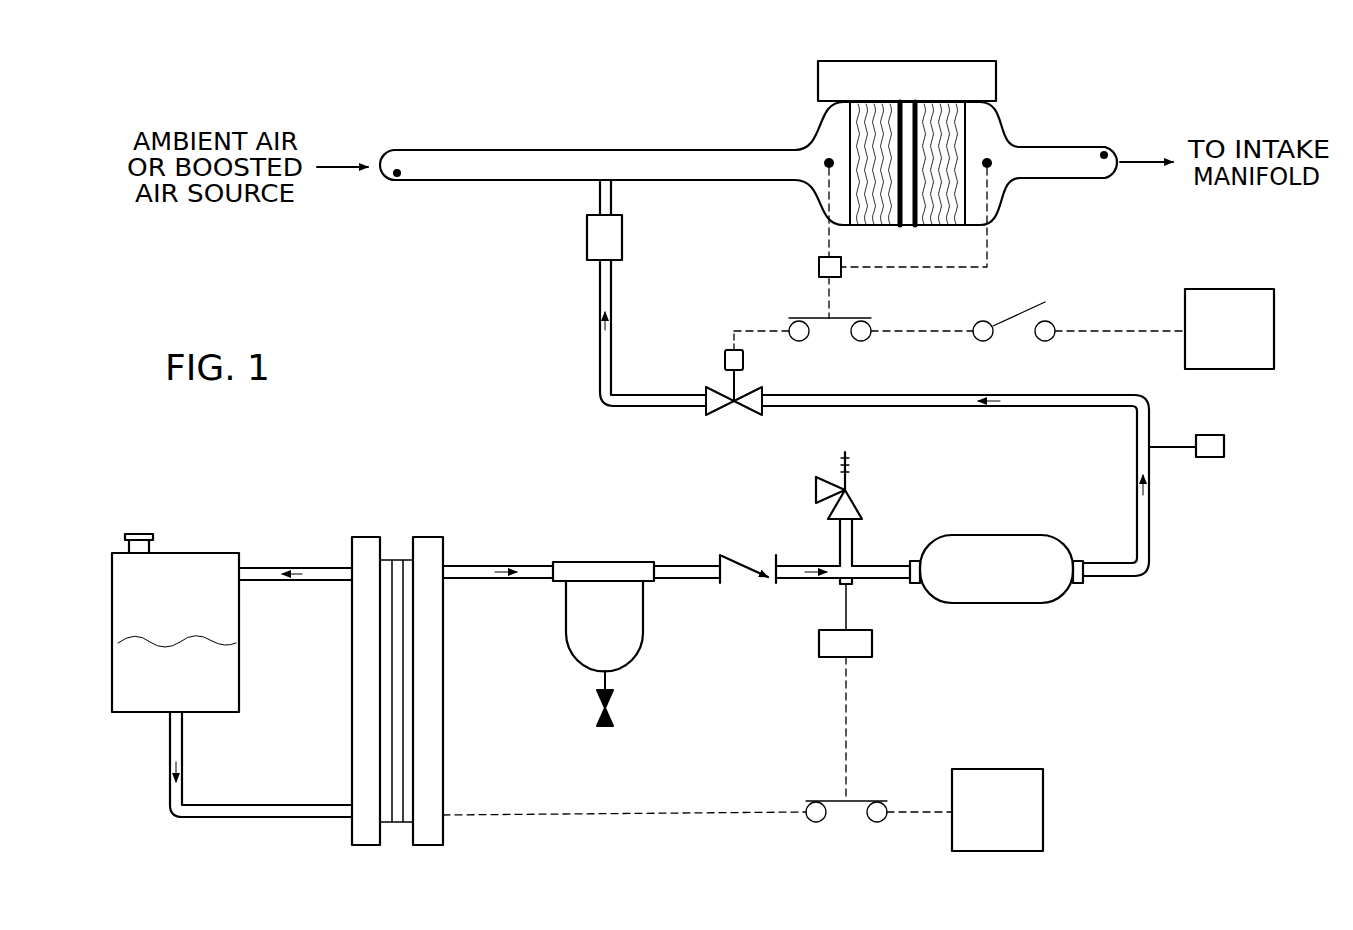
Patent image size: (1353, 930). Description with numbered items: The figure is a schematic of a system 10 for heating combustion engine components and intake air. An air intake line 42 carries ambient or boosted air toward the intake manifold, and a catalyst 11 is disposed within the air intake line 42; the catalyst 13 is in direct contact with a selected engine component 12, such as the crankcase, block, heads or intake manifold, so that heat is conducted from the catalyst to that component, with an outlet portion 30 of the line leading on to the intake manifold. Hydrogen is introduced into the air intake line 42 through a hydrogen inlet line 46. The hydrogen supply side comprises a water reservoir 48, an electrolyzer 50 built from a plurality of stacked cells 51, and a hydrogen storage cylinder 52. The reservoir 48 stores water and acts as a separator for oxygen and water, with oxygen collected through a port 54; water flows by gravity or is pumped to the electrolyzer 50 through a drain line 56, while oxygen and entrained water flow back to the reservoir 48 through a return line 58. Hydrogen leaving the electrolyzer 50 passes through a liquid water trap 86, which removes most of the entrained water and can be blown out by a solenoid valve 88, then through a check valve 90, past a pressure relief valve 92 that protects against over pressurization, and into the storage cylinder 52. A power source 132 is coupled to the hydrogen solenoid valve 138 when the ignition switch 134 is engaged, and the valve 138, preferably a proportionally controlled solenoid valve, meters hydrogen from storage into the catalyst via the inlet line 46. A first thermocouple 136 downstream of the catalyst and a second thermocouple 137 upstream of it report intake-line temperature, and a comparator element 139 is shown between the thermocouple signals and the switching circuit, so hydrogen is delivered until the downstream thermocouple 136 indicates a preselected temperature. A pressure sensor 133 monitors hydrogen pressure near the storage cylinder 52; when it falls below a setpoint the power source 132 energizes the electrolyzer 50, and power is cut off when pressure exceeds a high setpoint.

The system 10 is at (627, 86).
The catalyst 11 is at (1002, 208).
The engine component 12 is at (996, 68).
The catalyst 13 is at (850, 148).
The outlet duct 30 is at (1005, 122).
The air intake line 42 is at (472, 182).
The hydrogen inlet line 46 is at (598, 198).
The water reservoir 48 is at (240, 603).
The electrolyzer 50 is at (547, 672).
The stacked cells 51 is at (395, 560).
The hydrogen storage cylinder 52 is at (985, 535).
The port 54 is at (152, 536).
The drain line 56 is at (170, 742).
The return line 58 is at (262, 566).
The liquid water trap 86 is at (566, 622).
The solenoid valve 88 is at (598, 704).
The check valve 90 is at (720, 555).
The pressure relief valve 92 is at (850, 490).
The power source 132 is at (1220, 370).
The pressure sensor 133 is at (819, 636).
The ignition switch 134 is at (1010, 318).
The first thermocouple 136 is at (990, 250).
The second thermocouple 137 is at (828, 195).
The hydrogen solenoid valve 138 is at (738, 410).
The comparator 139 is at (819, 267).